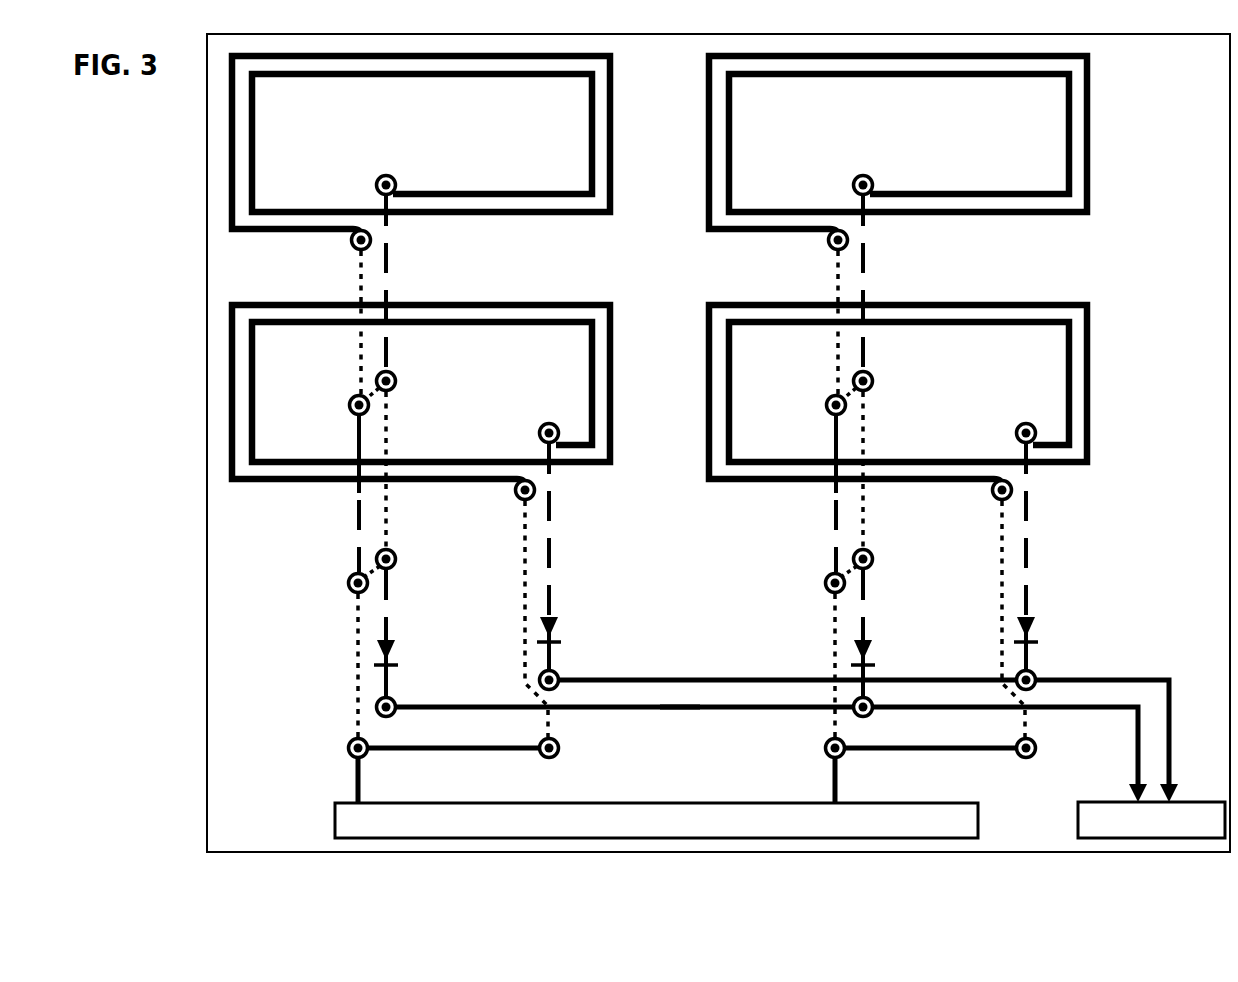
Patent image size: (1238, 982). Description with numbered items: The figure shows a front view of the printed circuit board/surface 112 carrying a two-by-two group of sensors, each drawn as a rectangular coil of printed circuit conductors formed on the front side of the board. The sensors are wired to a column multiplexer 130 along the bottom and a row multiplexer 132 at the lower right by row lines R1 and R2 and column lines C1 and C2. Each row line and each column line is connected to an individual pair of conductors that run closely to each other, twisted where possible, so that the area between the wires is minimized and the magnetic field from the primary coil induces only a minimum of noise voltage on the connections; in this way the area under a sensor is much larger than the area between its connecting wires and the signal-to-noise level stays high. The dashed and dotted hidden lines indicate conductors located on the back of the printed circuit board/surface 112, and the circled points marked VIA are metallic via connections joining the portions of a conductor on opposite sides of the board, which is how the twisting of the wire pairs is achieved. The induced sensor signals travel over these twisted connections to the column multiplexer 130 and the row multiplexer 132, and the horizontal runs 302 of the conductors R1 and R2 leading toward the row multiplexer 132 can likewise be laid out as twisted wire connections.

The printed circuit board/surface 112 is at (207, 571).
The column multiplexer 130 is at (335, 822).
The row multiplexer 132 is at (1078, 819).
The horizontal runs 302 is at (675, 723).
The metallic via connection VIA is at (380, 170).
The row line R1 is at (388, 256).
The row line R2 is at (551, 557).
The column line C1 is at (360, 287).
The column line C2 is at (837, 287).